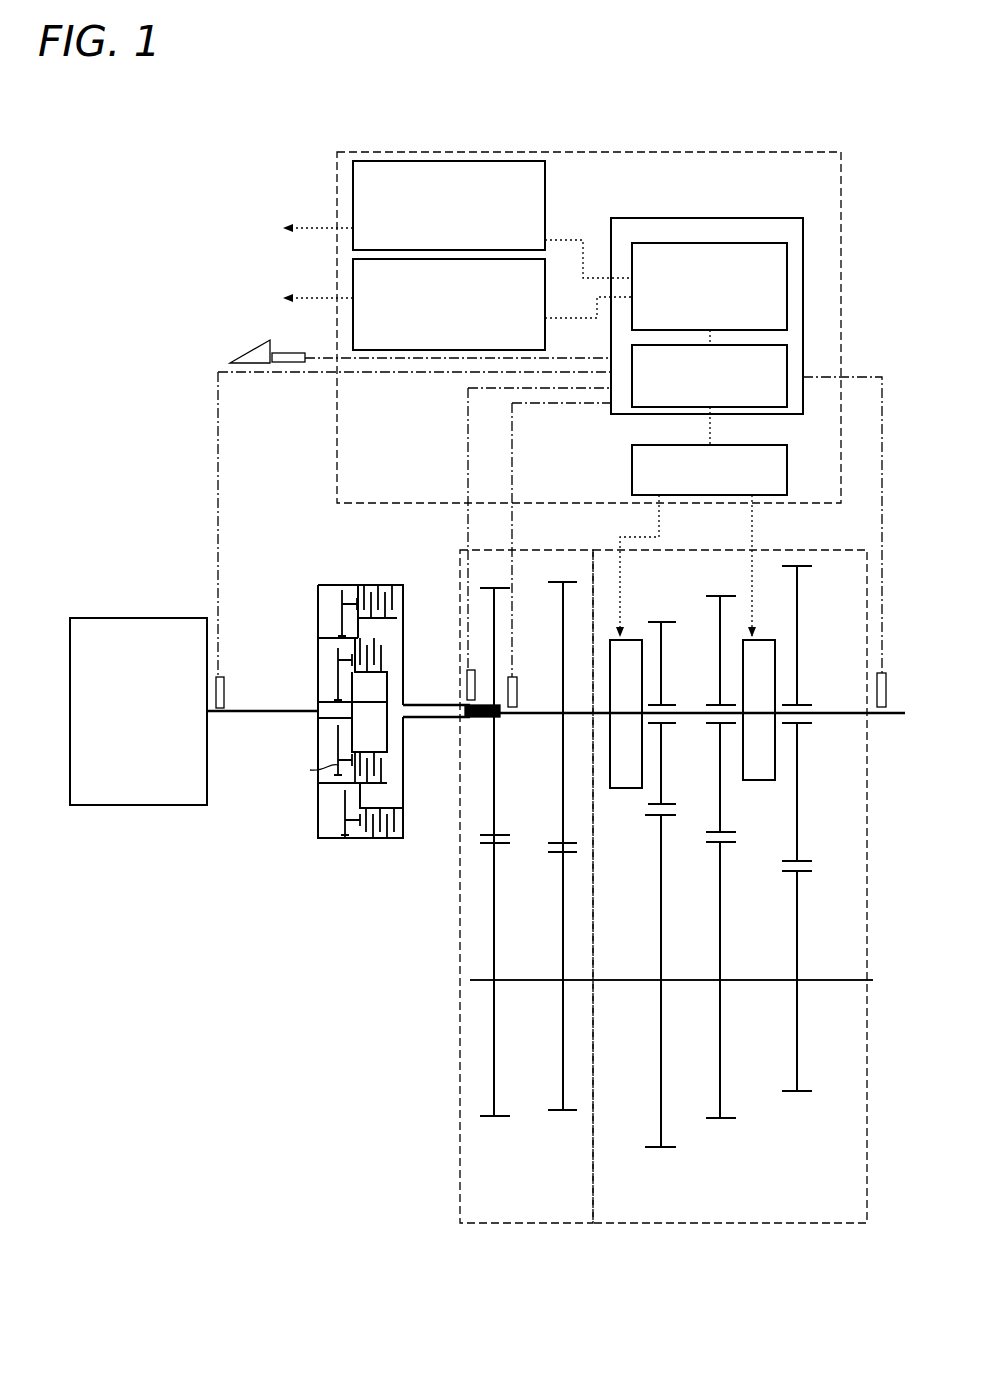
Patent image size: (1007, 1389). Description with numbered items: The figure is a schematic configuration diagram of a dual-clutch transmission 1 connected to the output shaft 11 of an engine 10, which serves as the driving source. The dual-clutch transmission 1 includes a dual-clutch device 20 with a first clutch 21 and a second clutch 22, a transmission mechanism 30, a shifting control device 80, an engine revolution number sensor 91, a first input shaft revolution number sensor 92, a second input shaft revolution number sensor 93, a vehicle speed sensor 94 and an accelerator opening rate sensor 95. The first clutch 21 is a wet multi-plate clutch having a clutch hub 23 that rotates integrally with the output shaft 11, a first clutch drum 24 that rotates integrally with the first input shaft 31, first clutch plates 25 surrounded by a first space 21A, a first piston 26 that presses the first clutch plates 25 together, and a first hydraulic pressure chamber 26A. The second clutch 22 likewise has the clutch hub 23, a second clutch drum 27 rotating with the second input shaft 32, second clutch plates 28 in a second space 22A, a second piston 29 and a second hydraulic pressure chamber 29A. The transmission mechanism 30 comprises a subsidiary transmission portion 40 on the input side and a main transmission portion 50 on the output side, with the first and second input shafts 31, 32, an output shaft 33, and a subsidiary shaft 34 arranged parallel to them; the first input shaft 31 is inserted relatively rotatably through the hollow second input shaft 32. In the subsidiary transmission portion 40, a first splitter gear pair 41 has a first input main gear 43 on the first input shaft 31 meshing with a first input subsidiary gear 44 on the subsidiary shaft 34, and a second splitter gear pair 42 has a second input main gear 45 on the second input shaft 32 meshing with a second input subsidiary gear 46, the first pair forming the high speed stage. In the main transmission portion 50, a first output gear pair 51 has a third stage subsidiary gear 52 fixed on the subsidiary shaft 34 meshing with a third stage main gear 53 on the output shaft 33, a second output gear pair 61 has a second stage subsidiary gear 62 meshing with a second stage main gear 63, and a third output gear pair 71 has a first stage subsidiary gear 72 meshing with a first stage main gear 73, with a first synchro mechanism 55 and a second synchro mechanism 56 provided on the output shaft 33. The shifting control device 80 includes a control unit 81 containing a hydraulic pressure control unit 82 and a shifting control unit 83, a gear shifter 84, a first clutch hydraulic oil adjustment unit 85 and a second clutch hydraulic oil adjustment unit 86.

The dual-clutch transmission 1 is at (873, 172).
The engine 10 is at (151, 723).
The output shaft 11 is at (245, 713).
The dual-clutch device 20 is at (363, 576).
The first clutch 21 is at (312, 655).
The first space 21A is at (386, 657).
The second clutch 22 is at (312, 594).
The second space 22A is at (403, 600).
The clutch hub 23 is at (322, 800).
The first clutch drum 24 is at (403, 693).
The first clutch plates 25 is at (369, 714).
The first piston 26 is at (332, 738).
The first hydraulic pressure chamber 26A is at (294, 502).
The second clutch drum 27 is at (405, 740).
The second clutch plates 28 is at (390, 838).
The second piston 29 is at (345, 838).
The second hydraulic pressure chamber 29A is at (286, 850).
The transmission mechanism 30 is at (857, 546).
The first input shaft 31 is at (545, 716).
The second input shaft 32 is at (482, 720).
The output shaft 33 is at (832, 710).
The subsidiary shaft 34 is at (608, 982).
The subsidiary transmission portion 40 is at (512, 549).
The first splitter gear pair 41 is at (562, 1125).
The second splitter gear pair 42 is at (494, 1130).
The first input main gear 43 is at (562, 778).
The first input subsidiary gear 44 is at (562, 892).
The second input main gear 45 is at (497, 808).
The second input subsidiary gear 46 is at (497, 948).
The main transmission portion 50 is at (768, 549).
The first output gear pair 51 is at (660, 1152).
The 3rd stage subsidiary gear 52 is at (663, 888).
The 3rd stage main gear 53 is at (663, 765).
The first synchro mechanism 55 is at (626, 790).
The second synchro mechanism 56 is at (770, 782).
The second output gear pair 61 is at (720, 1125).
The 2nd stage subsidiary gear 62 is at (723, 888).
The 2nd stage main gear 63 is at (718, 680).
The third output gear pair 71 is at (795, 1098).
The 1st stage subsidiary gear 72 is at (800, 920).
The 1st stage main gear 73 is at (800, 766).
The shifting control device 80 is at (728, 152).
The control unit 81 is at (765, 218).
The hydraulic pressure control unit 82 is at (787, 272).
The shifting control unit 83 is at (787, 360).
The gear shifter 84 is at (787, 478).
The first clutch hydraulic oil adjustment unit 85 is at (545, 200).
The second clutch hydraulic oil adjustment unit 86 is at (545, 332).
The engine revolution number sensor 91 is at (225, 692).
The first input shaft revolution number sensor 92 is at (518, 690).
The second input shaft revolution number sensor 93 is at (476, 685).
The vehicle speed sensor 94 is at (887, 690).
The accelerator opening rate sensor 95 is at (288, 353).